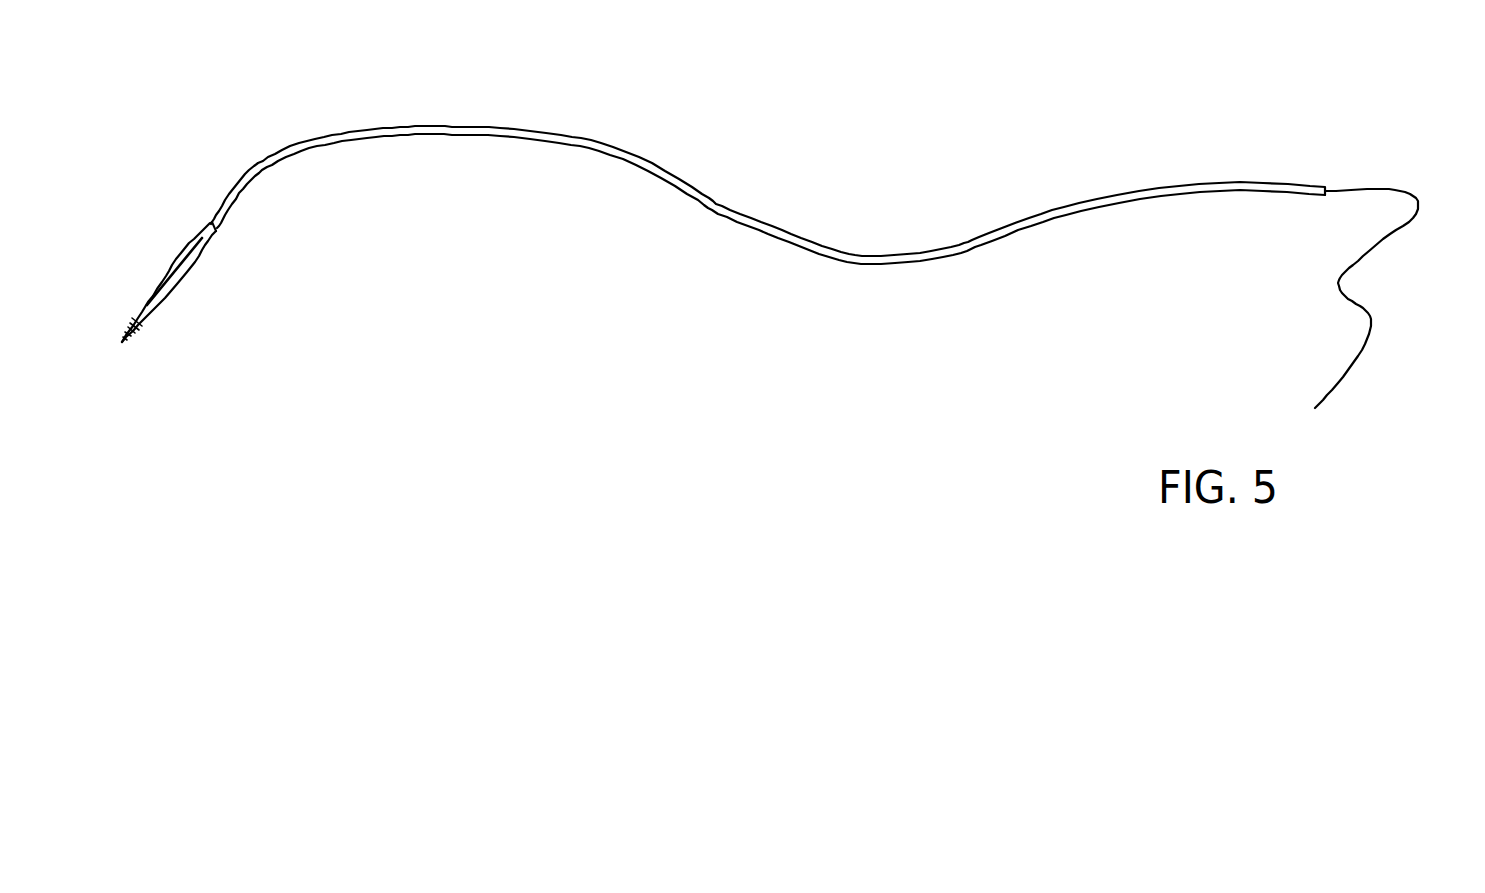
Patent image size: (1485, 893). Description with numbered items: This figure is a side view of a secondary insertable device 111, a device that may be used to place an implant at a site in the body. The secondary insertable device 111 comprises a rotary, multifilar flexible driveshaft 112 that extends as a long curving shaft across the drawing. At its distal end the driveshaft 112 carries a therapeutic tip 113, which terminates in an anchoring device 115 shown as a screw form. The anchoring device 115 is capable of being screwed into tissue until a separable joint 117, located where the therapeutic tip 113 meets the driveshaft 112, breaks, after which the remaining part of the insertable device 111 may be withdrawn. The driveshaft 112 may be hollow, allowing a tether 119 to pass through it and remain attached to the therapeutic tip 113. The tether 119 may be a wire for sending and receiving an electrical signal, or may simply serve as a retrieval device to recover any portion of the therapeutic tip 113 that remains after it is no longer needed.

The secondary insertable device 111 is at (596, 92).
The rotary multifilar flexible driveshaft 112 is at (732, 220).
The therapeutic tip 113 is at (195, 271).
The anchoring device 115 is at (132, 334).
The separable joint 117 is at (207, 226).
The tether 119 is at (1371, 318).